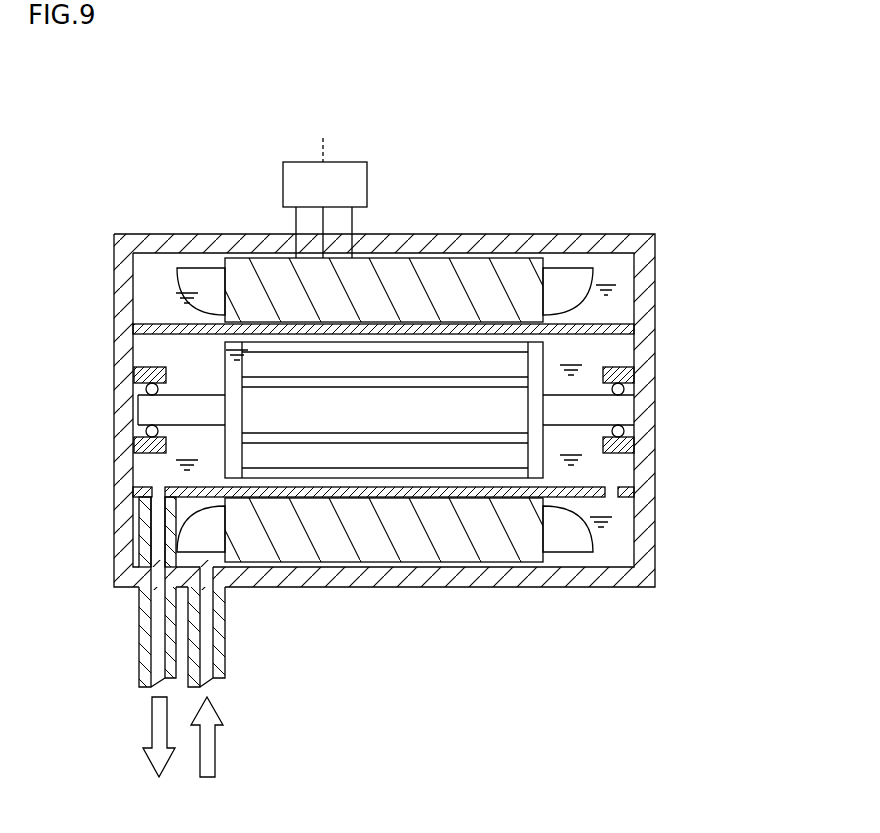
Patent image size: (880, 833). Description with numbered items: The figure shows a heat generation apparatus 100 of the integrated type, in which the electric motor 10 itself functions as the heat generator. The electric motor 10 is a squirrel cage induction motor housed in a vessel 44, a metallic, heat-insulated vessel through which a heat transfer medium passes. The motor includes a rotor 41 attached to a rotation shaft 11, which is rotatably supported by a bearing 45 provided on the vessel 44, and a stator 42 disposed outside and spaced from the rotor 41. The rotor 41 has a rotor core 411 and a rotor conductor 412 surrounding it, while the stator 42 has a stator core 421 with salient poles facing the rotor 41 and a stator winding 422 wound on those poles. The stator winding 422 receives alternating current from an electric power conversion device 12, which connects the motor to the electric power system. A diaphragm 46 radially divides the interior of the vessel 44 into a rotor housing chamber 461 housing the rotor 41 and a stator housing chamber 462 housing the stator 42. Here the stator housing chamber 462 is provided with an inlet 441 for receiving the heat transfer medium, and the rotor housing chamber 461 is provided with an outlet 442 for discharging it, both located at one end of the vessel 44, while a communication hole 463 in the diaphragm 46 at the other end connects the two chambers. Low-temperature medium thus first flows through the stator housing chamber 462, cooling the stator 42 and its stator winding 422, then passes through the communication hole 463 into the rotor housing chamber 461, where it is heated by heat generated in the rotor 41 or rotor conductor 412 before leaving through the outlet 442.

The heat generation apparatus 100 is at (632, 208).
The vessel 44 is at (207, 247).
The electric power conversion device 12 is at (364, 180).
The electric motor 10 is at (560, 347).
The stator 42 is at (395, 404).
The stator core 421 is at (463, 553).
The stator winding 422 is at (567, 280).
The rotor 41 is at (415, 292).
The rotor core 411 is at (412, 404).
The rotor conductor 412 is at (476, 372).
The diaphragm 46 is at (429, 460).
The rotor housing chamber 461 is at (597, 467).
The stator housing chamber 462 is at (611, 278).
The communication hole 463 is at (610, 495).
The bearing 45 is at (135, 392).
The rotation shaft 11 is at (152, 405).
The outlet 442 is at (152, 498).
The inlet 441 is at (210, 593).